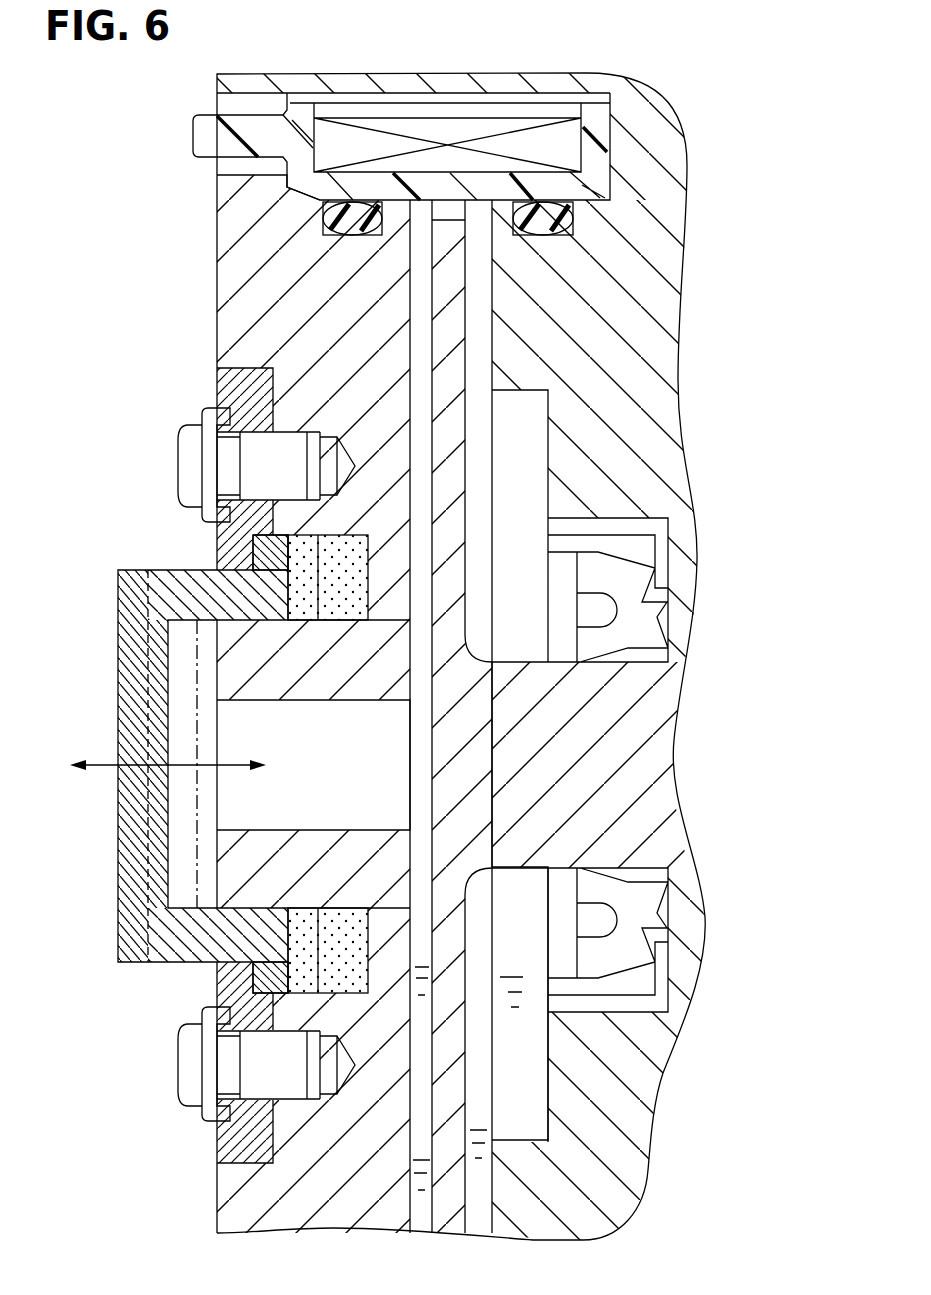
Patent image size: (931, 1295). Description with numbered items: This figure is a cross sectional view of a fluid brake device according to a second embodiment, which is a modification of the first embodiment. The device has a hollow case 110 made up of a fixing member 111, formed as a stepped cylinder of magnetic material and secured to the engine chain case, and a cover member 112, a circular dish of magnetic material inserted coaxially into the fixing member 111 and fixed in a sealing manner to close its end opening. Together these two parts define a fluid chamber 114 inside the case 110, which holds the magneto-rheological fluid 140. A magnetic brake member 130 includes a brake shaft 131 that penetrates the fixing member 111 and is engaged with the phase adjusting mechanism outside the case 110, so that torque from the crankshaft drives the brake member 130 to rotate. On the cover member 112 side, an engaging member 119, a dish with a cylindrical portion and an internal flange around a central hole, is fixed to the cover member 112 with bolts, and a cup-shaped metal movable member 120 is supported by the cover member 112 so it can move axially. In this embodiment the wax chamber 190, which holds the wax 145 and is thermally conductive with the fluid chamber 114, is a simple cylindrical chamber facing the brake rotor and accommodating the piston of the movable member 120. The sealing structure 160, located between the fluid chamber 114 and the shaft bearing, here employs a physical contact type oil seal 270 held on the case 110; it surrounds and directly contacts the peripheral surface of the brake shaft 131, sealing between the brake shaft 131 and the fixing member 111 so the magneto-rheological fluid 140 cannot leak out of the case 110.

The case 110 is at (78, 222).
The fixing member 111 is at (527, 263).
The cover member 112 is at (244, 226).
The fluid chamber 114 is at (451, 213).
The engaging member 119 is at (213, 533).
The movable member 120 is at (118, 673).
The brake member 130 is at (627, 722).
The brake shaft 131 is at (627, 722).
The magneto-rheological fluid (MRF) 140 is at (417, 1203).
The wax 145 is at (345, 580).
The sealing structure 160 is at (510, 895).
The wax chamber 190 is at (347, 947).
The oil seal 270 is at (630, 640).